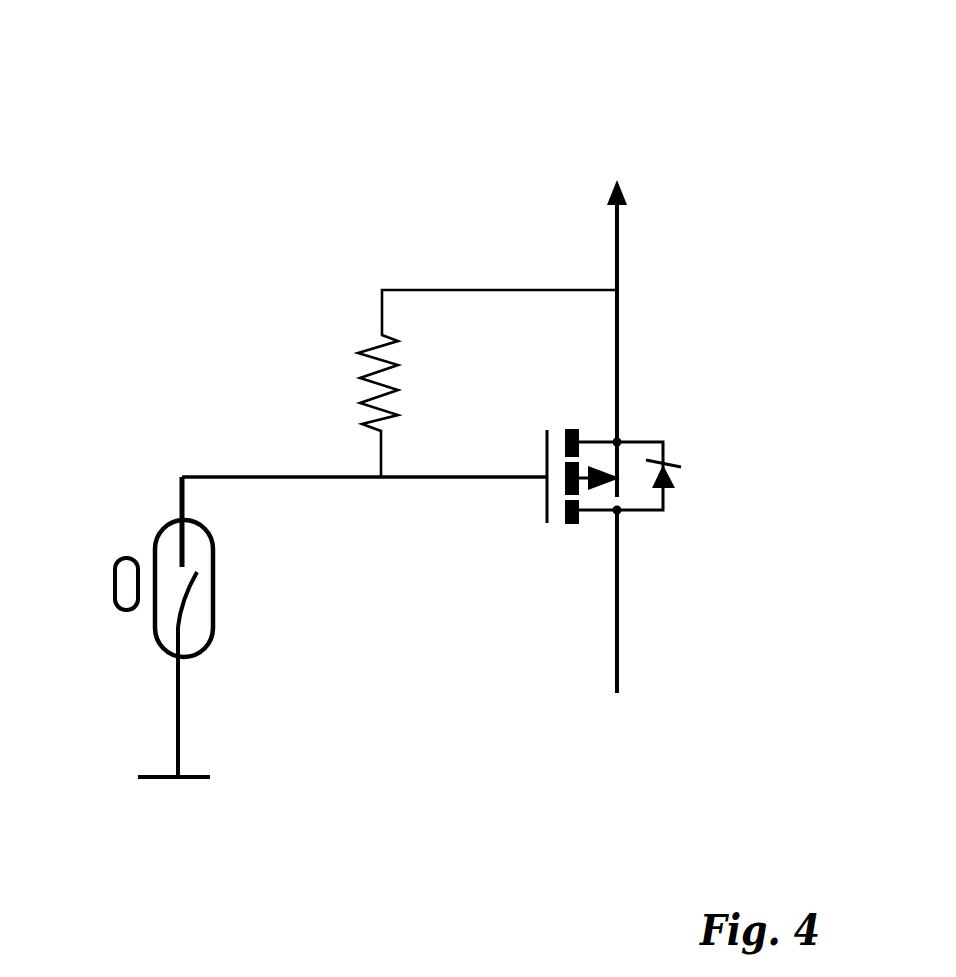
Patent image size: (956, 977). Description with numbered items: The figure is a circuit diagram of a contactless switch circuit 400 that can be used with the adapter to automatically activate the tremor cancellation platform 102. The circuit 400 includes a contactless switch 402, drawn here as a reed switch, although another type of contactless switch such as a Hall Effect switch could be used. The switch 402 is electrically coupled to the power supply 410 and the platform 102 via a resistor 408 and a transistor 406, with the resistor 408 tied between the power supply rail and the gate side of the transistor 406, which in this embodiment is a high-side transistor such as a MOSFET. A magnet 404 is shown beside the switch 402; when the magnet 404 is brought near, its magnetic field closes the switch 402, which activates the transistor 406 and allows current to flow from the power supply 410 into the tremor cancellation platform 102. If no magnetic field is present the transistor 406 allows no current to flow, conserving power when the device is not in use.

The contactless switch circuit 400 is at (488, 70).
The contactless switch 402 is at (213, 613).
The magnet 404 is at (116, 592).
The transistor 406 is at (652, 498).
The resistor 408 is at (371, 387).
The power supply 410 is at (533, 338).
The tremor cancellation platform 102 is at (665, 631).